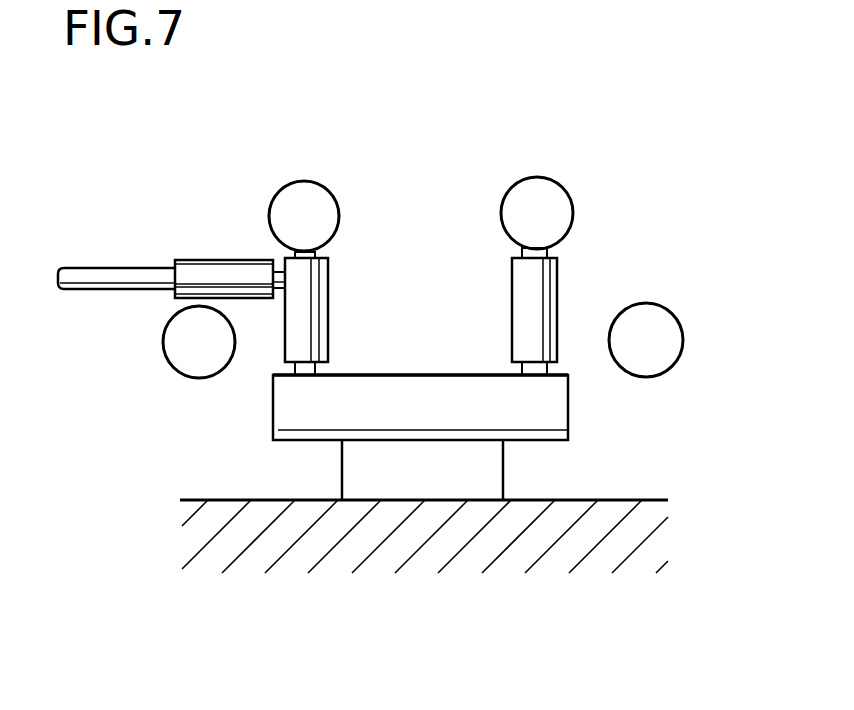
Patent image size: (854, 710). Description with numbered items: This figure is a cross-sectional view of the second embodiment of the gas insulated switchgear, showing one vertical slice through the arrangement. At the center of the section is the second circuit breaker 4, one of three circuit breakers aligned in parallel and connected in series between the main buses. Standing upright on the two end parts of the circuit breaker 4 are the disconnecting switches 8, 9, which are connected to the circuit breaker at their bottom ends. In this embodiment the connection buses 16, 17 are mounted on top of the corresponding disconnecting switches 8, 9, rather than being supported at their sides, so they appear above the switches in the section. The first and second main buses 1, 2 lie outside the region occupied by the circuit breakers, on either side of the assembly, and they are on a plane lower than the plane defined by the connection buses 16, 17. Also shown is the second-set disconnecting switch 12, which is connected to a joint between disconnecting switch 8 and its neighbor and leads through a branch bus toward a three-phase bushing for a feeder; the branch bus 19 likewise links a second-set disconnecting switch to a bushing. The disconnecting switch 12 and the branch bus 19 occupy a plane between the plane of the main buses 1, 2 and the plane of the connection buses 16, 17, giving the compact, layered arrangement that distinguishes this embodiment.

The first main bus 1 is at (669, 358).
The second main bus 2 is at (186, 366).
The second circuit breaker 4 is at (425, 392).
The disconnecting switch 8 is at (323, 275).
The disconnecting switch 9 is at (522, 282).
The disconnecting switch 12 is at (219, 268).
The connection bus 16 is at (554, 198).
The connection bus 17 is at (313, 196).
The branch bus 19 is at (114, 268).